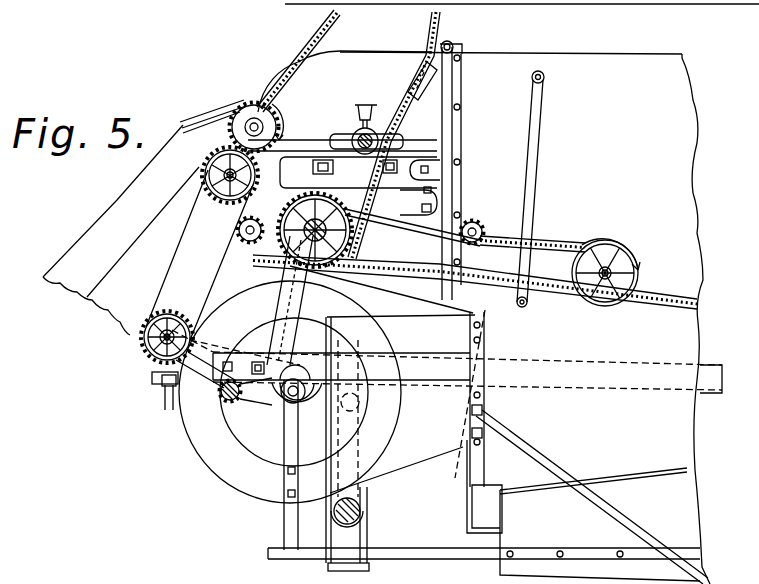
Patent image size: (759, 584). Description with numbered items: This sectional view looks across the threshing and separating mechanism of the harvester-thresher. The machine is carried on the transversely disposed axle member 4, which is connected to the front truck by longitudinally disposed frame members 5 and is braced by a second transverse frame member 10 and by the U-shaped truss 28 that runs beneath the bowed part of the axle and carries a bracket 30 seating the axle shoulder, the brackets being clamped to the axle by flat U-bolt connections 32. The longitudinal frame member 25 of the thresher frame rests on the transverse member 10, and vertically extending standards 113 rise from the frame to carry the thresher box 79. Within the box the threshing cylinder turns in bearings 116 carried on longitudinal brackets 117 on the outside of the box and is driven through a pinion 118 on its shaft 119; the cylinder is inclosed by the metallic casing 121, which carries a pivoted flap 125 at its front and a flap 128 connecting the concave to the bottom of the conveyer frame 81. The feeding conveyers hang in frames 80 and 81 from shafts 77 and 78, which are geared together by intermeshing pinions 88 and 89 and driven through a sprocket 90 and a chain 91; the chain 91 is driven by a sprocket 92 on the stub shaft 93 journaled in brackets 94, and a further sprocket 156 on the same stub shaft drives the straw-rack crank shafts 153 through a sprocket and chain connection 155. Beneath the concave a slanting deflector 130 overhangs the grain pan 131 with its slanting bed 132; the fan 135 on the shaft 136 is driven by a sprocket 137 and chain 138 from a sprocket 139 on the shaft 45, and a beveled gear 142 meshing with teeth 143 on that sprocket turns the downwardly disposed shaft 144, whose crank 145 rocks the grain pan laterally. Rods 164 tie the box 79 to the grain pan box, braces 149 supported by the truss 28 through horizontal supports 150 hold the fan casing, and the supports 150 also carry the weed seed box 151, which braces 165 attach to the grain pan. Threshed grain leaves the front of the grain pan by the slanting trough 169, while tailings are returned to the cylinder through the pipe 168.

The pipe 168 is at (320, 32).
The metallic casing 121 is at (346, 62).
The chain 91 is at (305, 46).
The bearings 116 is at (398, 68).
The shaft 119 is at (356, 128).
The pinion 118 is at (455, 48).
The flap 128 is at (455, 38).
The brackets 117 is at (455, 133).
The thresher frame 79 is at (522, 56).
The rods 164 is at (540, 100).
The pinion 88 is at (256, 104).
The shaft 77 is at (226, 108).
The pivoted flap 125 is at (228, 117).
The pinion 89 is at (222, 175).
The shaft 78 is at (205, 181).
The sprocket 90 is at (204, 195).
The frame 80 is at (87, 230).
The frame 81 is at (77, 291).
The slanting deflector 130 is at (238, 240).
The standards 113 is at (218, 268).
The frame members 5 is at (243, 360).
The sprocket 156 is at (348, 213).
The sprocket 92 is at (352, 236).
The stub shaft 93 is at (328, 240).
The brackets 94 is at (370, 298).
The shaft 144 is at (335, 352).
The multiple throw crank shafts 153 is at (622, 244).
The sprocket and chain connection 155 is at (645, 280).
The frame member 25 is at (713, 373).
The beveled gear 142 is at (143, 338).
The shaft 45 is at (158, 342).
The sprocket 139 is at (146, 356).
The teeth 143 is at (150, 378).
The chain 138 is at (150, 382).
The second transverse frame member 10 is at (163, 400).
The shaft 136 is at (224, 403).
The sprocket 137 is at (272, 400).
The fan 135 is at (270, 410).
The axle member 4 is at (325, 512).
The braces 149 is at (288, 526).
The truss 28 is at (320, 563).
The U-bolt connection 32 is at (362, 496).
The bracket 30 is at (368, 531).
The grain pan 131 is at (362, 404).
The slanting bed 132 is at (360, 416).
The crank 145 is at (457, 462).
The trough 169 is at (480, 513).
The supports 150 is at (446, 560).
The weed seed box 151 is at (681, 505).
The braces 165 is at (650, 540).